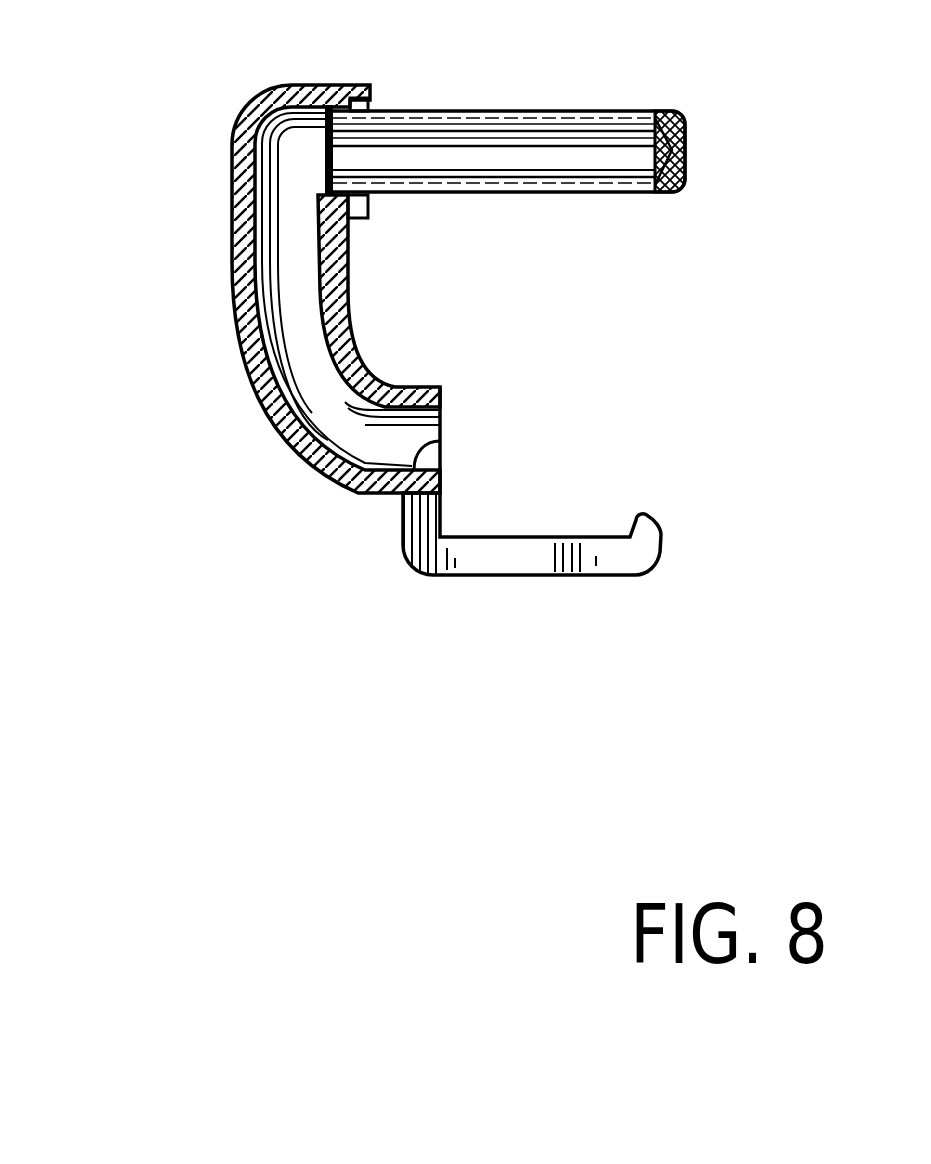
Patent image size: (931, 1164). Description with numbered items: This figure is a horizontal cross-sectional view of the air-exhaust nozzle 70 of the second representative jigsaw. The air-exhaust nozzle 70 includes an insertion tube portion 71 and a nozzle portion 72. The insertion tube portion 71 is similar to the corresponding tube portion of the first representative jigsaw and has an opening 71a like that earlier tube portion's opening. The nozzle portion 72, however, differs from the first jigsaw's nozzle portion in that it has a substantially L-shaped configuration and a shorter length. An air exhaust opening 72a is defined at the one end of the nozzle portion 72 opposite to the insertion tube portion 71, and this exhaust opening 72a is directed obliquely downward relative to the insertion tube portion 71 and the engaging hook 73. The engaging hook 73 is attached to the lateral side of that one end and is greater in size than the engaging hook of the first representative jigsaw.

The air-exhaust nozzle 70 is at (198, 223).
The insertion tube portion 71 is at (574, 193).
The opening 71a is at (532, 110).
The nozzle portion 72 is at (247, 368).
The air exhaust opening 72a is at (447, 440).
The engaging hook 73 is at (535, 573).